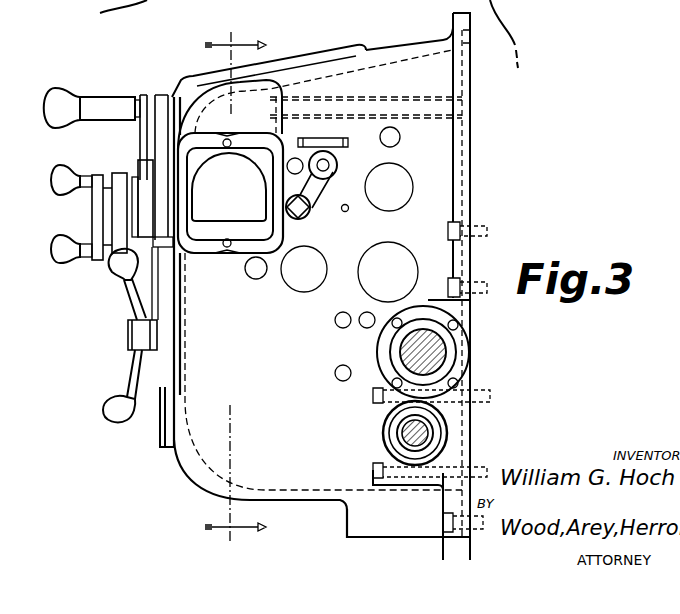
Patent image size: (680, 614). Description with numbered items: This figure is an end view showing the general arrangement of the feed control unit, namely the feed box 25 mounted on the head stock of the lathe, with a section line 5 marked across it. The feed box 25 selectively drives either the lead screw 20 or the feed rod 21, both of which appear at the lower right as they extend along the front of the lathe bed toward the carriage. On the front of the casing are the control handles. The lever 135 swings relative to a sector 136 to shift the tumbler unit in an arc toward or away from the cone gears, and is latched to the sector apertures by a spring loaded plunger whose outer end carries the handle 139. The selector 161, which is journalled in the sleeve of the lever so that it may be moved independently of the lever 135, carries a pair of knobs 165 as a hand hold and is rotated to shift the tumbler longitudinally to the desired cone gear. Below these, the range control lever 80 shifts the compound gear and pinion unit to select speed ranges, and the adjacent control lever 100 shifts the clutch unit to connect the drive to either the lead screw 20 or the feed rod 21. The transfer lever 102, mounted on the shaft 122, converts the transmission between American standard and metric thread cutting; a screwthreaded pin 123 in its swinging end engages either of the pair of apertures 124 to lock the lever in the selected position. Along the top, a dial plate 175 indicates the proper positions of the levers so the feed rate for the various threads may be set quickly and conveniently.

The section line 5- 5 is at (214, 285).
The feed box 25 is at (389, 65).
The dial plate 175 is at (302, 54).
The lever 135 is at (146, 144).
The sector 136 is at (163, 100).
The handle 139 is at (55, 110).
The knobs 165 is at (58, 243).
The selector 161 is at (96, 217).
The range control lever 80 is at (132, 303).
The control lever 100 is at (118, 398).
The shaft 122 is at (330, 165).
The transfer lever 102 is at (317, 196).
The pin 123 is at (298, 218).
The apertures 124 is at (344, 212).
The lead screw 20 is at (410, 352).
The feed rod 21 is at (400, 435).